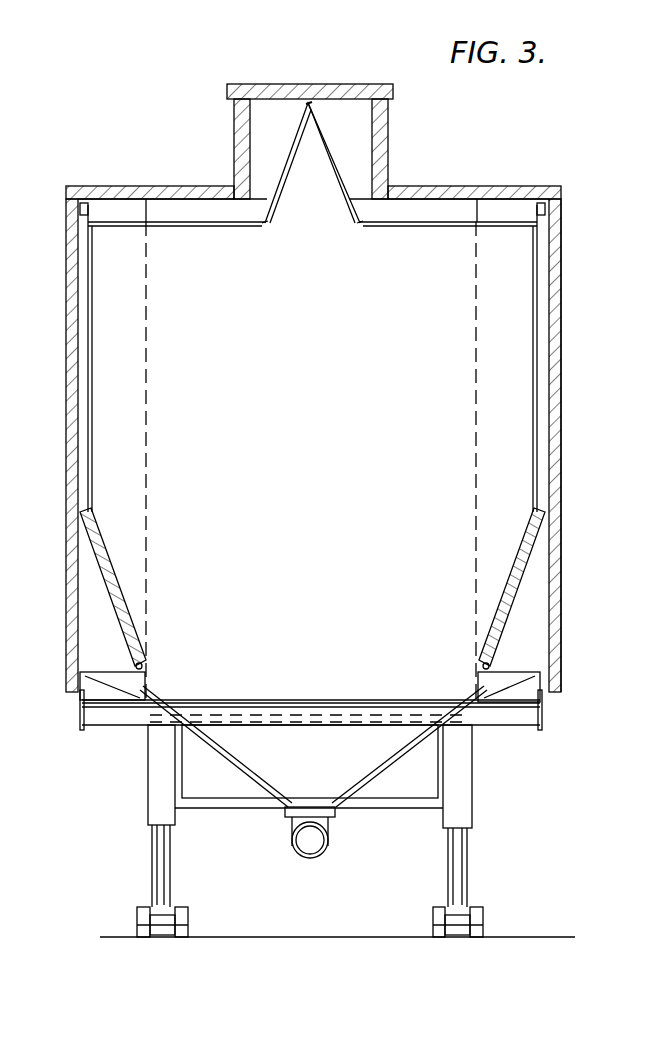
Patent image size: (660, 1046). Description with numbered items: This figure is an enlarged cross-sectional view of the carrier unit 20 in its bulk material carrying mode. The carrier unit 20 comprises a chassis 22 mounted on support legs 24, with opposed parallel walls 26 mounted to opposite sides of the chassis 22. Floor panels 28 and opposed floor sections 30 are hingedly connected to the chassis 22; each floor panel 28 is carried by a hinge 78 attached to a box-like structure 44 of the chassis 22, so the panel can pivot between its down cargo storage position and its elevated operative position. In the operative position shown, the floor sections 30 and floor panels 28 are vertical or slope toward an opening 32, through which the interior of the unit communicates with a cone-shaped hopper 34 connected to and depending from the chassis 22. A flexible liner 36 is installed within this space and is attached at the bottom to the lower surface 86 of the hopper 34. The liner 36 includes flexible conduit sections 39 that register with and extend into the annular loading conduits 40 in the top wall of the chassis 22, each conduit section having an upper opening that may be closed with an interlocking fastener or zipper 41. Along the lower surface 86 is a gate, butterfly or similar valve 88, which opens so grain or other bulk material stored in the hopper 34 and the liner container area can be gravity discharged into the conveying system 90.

The carrier unit 20 is at (510, 182).
The chassis 22 is at (530, 728).
The support legs 24 is at (463, 801).
The walls 26 is at (563, 368).
The floor panels 28 is at (110, 598).
The floor sections 30 is at (306, 576).
The opening 32 is at (295, 696).
The hoppers 34 is at (243, 777).
The flexible liner 36 is at (172, 226).
The flexible conduit sections 39 is at (336, 178).
The annular loading conduits 40 is at (388, 168).
The interlocking fastener or zipper 41 is at (318, 105).
The box-like structure 44 is at (80, 701).
The hinge 78 is at (150, 666).
The lower surface 86 is at (331, 800).
The valve 88 is at (332, 822).
The conveying system 90 is at (318, 850).